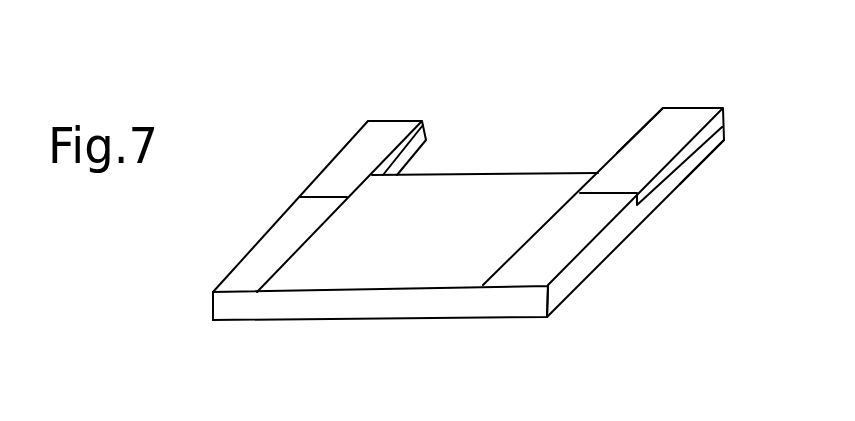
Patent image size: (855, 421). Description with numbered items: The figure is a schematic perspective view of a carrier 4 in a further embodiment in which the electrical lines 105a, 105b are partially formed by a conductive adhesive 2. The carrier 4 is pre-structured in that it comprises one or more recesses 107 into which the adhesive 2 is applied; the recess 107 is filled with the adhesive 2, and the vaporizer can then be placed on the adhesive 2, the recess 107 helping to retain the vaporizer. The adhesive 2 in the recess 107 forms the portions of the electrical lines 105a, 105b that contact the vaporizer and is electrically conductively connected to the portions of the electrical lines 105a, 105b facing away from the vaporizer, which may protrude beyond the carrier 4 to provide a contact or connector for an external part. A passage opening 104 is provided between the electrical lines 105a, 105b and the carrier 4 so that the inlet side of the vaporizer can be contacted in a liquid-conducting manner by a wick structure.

The conductive adhesive 2 is at (677, 125).
The carrier 4 is at (457, 270).
The passage opening 104 is at (617, 150).
The electrical line 105a is at (602, 208).
The electrical line 105b is at (255, 272).
The recess 107 is at (691, 193).